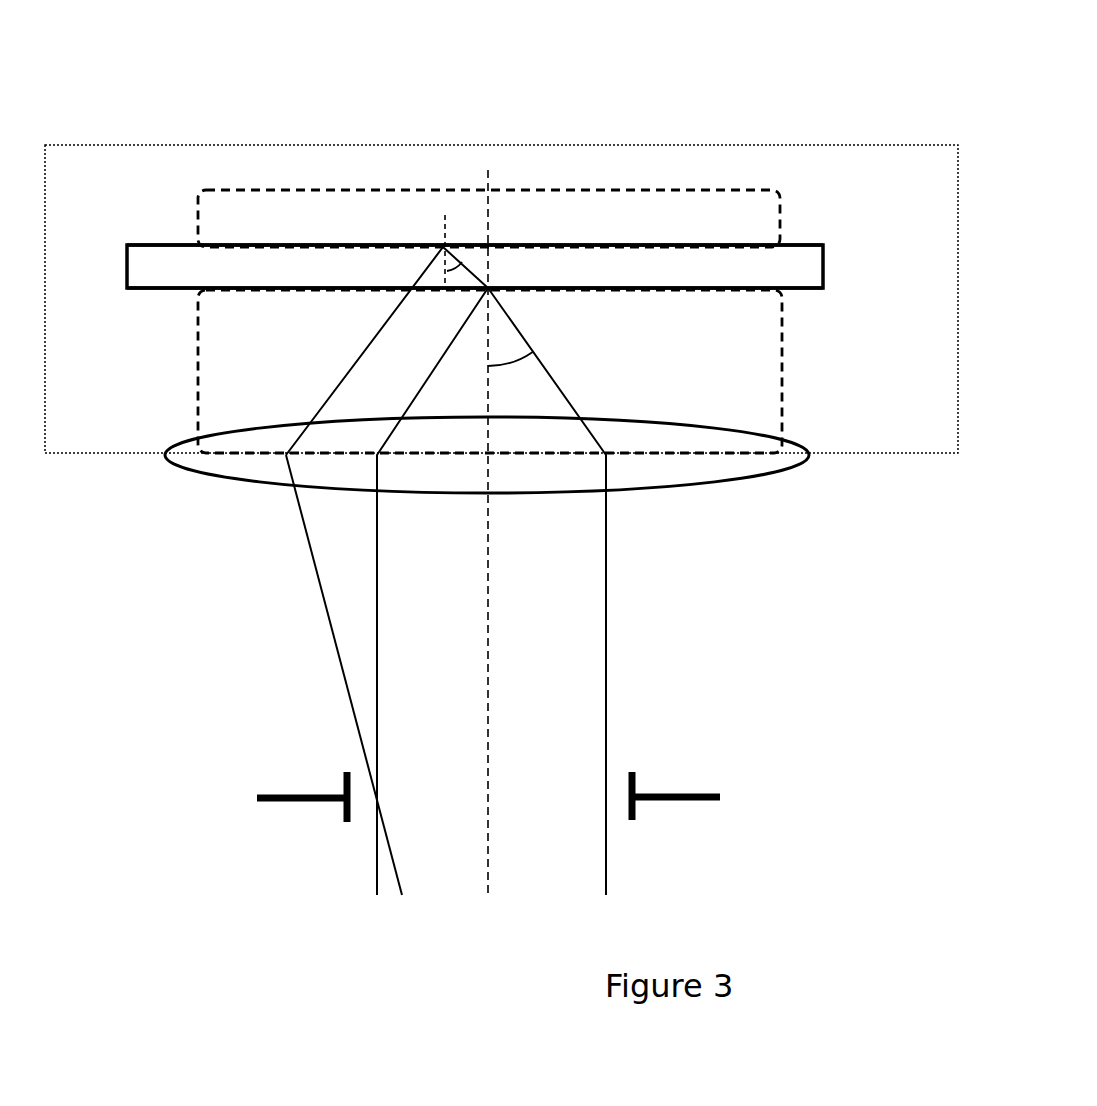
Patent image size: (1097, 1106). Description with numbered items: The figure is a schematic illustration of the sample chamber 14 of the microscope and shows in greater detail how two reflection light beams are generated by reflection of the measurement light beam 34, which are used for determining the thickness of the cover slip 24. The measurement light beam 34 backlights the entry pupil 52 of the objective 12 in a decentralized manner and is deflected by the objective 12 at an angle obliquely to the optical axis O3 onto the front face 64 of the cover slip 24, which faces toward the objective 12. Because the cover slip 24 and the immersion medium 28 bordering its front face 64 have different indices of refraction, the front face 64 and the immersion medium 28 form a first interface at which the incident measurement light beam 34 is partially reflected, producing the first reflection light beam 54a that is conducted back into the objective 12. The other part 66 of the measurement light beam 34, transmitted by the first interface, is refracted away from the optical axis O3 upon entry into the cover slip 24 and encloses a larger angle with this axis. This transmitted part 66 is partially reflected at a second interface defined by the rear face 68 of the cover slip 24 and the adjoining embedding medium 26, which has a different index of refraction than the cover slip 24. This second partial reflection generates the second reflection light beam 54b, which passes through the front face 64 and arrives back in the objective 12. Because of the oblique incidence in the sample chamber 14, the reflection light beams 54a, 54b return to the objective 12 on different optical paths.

The sample chamber 14 is at (893, 145).
The embedding medium 26 is at (198, 212).
The immersion medium 28 is at (198, 332).
The cover slip 24 is at (795, 258).
The rear face 68 is at (765, 247).
The front face 64 is at (793, 290).
The optical axis O3 is at (492, 880).
The second reflection light beam 54b is at (422, 263).
The first reflection light beam 54a is at (437, 360).
The measurement light beam 34 is at (582, 410).
The transmitted part of the measurement light beam 66 is at (477, 278).
The objective 12 is at (810, 458).
The entry pupil 52 is at (655, 787).